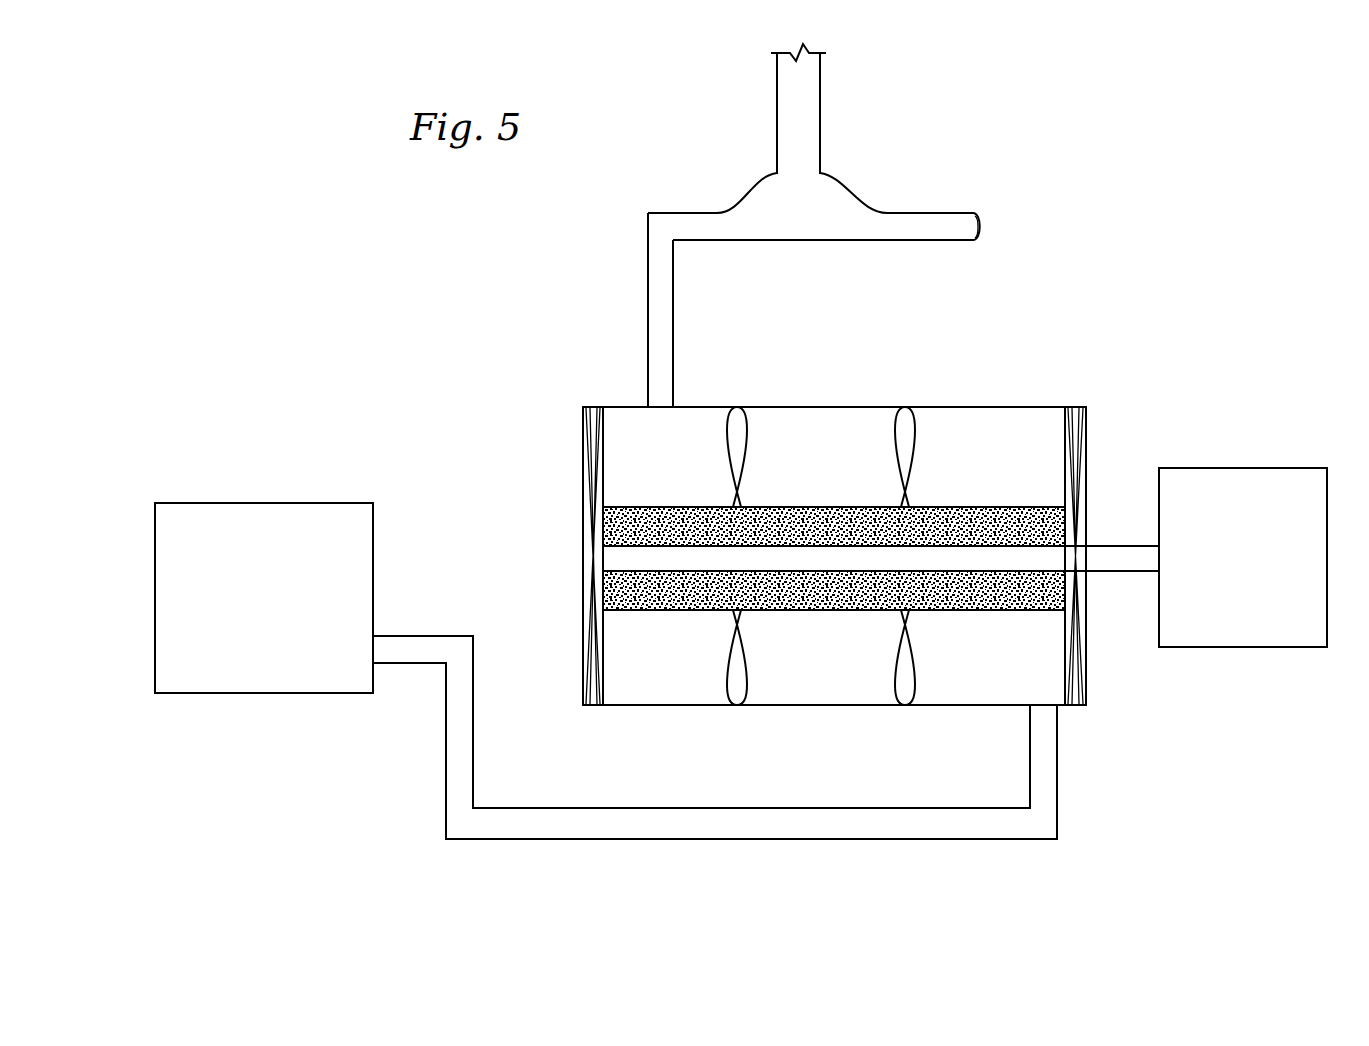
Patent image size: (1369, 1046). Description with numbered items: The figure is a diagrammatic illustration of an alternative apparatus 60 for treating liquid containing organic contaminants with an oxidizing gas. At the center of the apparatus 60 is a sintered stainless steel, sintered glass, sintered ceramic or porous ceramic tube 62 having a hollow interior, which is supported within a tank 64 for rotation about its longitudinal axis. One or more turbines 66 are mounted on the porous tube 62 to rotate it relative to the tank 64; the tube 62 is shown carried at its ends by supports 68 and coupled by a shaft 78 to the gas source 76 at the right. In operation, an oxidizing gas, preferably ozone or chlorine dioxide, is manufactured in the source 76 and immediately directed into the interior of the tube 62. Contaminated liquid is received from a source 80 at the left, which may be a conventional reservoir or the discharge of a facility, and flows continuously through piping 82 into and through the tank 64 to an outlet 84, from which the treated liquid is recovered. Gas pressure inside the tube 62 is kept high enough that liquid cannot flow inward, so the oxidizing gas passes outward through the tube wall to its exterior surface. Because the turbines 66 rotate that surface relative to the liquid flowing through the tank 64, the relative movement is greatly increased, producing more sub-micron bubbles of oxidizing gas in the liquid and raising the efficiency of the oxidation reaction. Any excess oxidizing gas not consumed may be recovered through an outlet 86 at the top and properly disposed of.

The apparatus 60 is at (435, 308).
The sintered/porous tube 62 is at (825, 507).
The tank 64 is at (842, 407).
The turbines 66 is at (723, 433).
The end coils 68 is at (597, 402).
The source 76 is at (1205, 648).
The shaft 78 is at (1130, 545).
The source 80 is at (310, 503).
The piping 82 is at (680, 840).
The outlet 84 is at (647, 289).
The outlet 86 is at (748, 186).